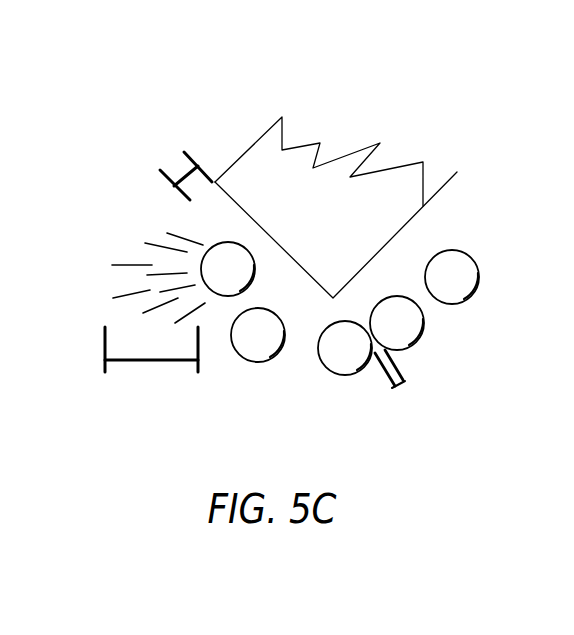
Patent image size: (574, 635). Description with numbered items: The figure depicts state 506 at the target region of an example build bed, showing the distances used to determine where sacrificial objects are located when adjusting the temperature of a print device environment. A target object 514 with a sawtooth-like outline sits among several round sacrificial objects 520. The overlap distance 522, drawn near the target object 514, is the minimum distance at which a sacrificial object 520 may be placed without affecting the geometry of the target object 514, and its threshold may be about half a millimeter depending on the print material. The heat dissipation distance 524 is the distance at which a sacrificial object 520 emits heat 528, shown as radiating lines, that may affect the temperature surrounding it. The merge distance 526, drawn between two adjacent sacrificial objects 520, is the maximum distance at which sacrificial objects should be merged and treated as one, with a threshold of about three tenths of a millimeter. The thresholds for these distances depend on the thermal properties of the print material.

The state 506 is at (75, 64).
The target object 514 is at (423, 207).
The sacrificial object 520 is at (321, 365).
The overlap distance 522 is at (178, 173).
The heat dissipation distance 524 is at (145, 363).
The merge distance 526 is at (403, 383).
The heat 528 is at (104, 261).